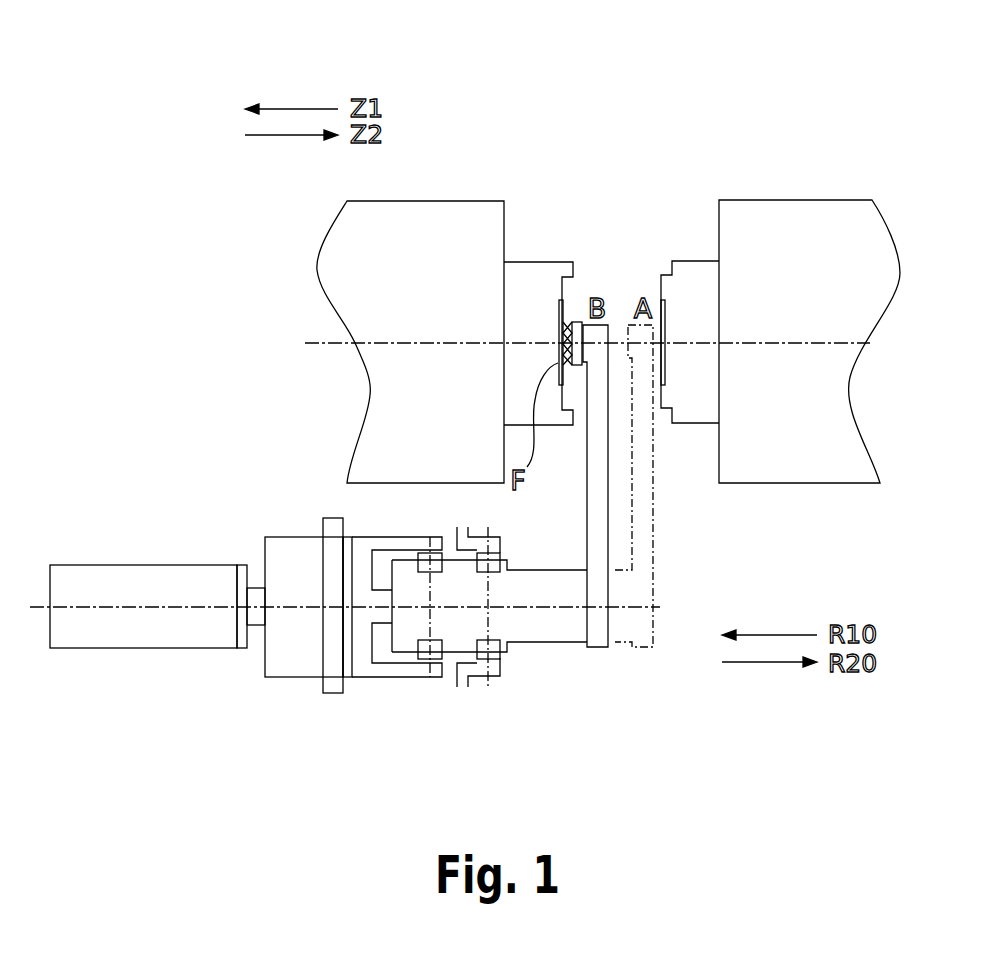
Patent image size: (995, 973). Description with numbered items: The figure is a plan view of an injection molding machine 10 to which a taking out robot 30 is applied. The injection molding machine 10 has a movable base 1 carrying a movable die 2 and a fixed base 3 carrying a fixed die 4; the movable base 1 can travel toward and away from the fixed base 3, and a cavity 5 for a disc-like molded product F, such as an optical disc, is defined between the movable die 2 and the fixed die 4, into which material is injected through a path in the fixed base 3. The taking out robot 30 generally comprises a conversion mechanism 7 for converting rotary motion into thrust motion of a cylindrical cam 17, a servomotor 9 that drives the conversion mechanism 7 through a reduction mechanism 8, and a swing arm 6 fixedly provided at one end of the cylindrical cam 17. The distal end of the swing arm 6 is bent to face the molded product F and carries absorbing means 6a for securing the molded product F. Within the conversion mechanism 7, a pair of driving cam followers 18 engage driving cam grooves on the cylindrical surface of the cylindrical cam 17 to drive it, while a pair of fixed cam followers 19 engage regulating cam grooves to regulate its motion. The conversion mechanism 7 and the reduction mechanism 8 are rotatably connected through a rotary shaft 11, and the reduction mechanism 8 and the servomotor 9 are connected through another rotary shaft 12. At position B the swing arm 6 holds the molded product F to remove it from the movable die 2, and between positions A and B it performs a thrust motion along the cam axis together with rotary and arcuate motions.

The movable base 1 is at (443, 220).
The movable die 2 is at (525, 277).
The fixed base 3 is at (785, 218).
The fixed die 4 is at (688, 277).
The cavity 5 is at (561, 303).
The swing arm 6 is at (592, 640).
The absorbing means 6a is at (568, 323).
The conversion mechanism 7 is at (509, 794).
The reduction mechanism 8 is at (335, 650).
The servomotor 9 is at (170, 635).
The injection molding machine 10 is at (648, 183).
The rotary shaft 11 is at (257, 618).
The rotary shaft 12 is at (378, 607).
The cylindrical cam 17 is at (533, 625).
The driving cam followers 18 is at (422, 562).
The fixed cam followers 19 is at (490, 560).
The taking out robot 30 is at (447, 738).